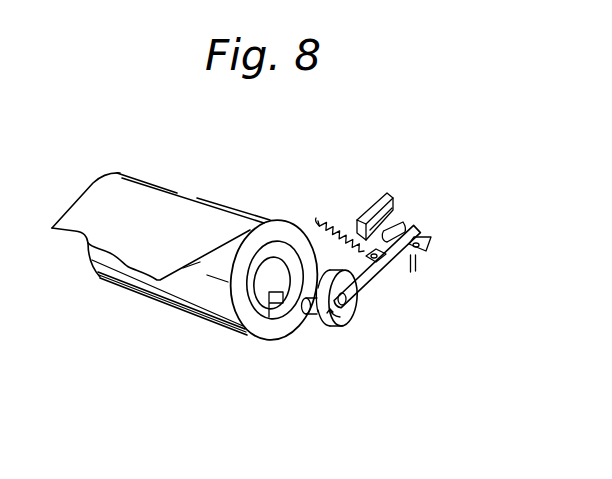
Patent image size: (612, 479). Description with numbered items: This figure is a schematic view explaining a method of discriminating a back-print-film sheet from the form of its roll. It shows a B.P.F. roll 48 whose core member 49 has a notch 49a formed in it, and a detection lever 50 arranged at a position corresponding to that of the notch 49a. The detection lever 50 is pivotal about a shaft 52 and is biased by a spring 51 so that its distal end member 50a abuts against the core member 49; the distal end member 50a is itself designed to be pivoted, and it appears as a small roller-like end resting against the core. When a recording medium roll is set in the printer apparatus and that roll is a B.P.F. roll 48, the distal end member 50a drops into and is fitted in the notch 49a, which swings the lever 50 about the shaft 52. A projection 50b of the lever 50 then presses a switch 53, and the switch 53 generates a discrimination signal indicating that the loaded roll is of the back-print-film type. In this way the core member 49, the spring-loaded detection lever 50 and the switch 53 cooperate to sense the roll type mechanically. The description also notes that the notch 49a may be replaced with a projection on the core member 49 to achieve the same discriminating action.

The B.P.F. roll 48 is at (192, 303).
The core member 49 is at (250, 303).
The notch 49a is at (277, 306).
The distal end member 50a is at (305, 313).
The detection lever 50 is at (376, 274).
The projection 50b is at (402, 224).
The spring 51 is at (340, 233).
The shaft 52 is at (426, 246).
The switch 53 is at (378, 193).